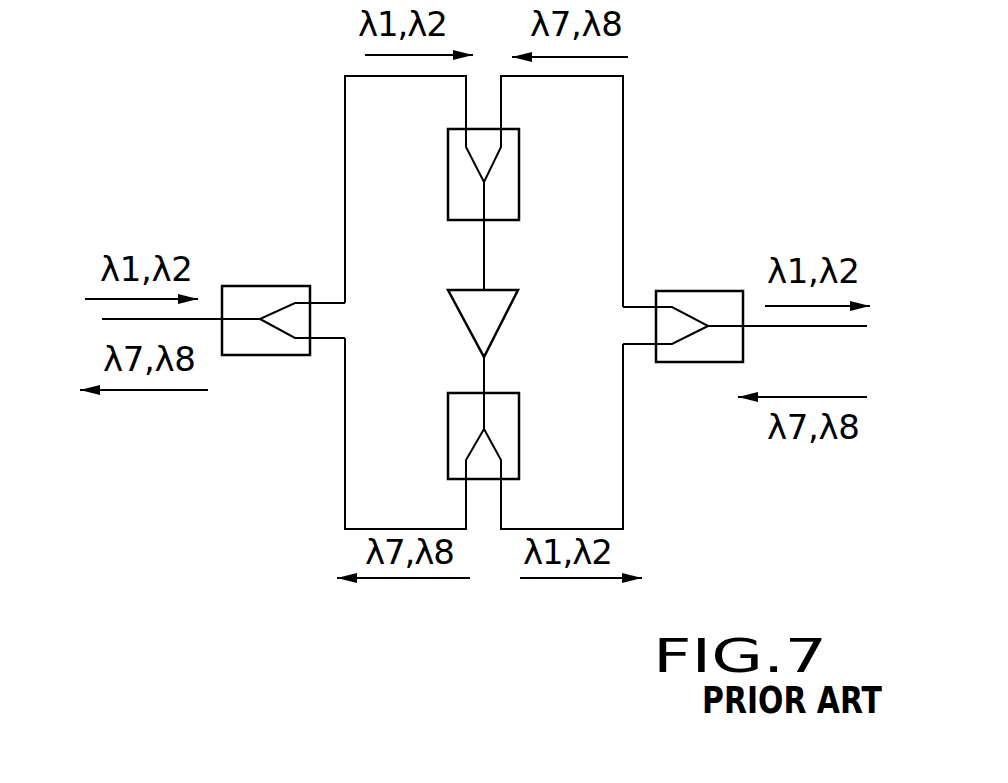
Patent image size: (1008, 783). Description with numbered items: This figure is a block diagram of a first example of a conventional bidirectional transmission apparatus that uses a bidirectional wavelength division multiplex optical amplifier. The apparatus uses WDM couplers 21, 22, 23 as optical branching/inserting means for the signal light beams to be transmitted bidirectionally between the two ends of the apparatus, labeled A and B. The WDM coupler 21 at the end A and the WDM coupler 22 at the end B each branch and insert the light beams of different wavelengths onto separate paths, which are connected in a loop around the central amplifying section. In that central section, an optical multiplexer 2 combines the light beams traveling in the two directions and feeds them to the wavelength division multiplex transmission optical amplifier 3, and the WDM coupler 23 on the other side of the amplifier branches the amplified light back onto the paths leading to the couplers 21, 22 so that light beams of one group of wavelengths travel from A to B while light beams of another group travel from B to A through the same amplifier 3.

The optical multiplexer 2 is at (505, 220).
The wavelength division multiplex transmission optical amplifier 3 is at (500, 330).
The WDM coupler 21 is at (243, 287).
The WDM coupler 22 is at (720, 290).
The WDM coupler 23 is at (519, 423).
The terminal A is at (113, 300).
The terminal B is at (827, 328).